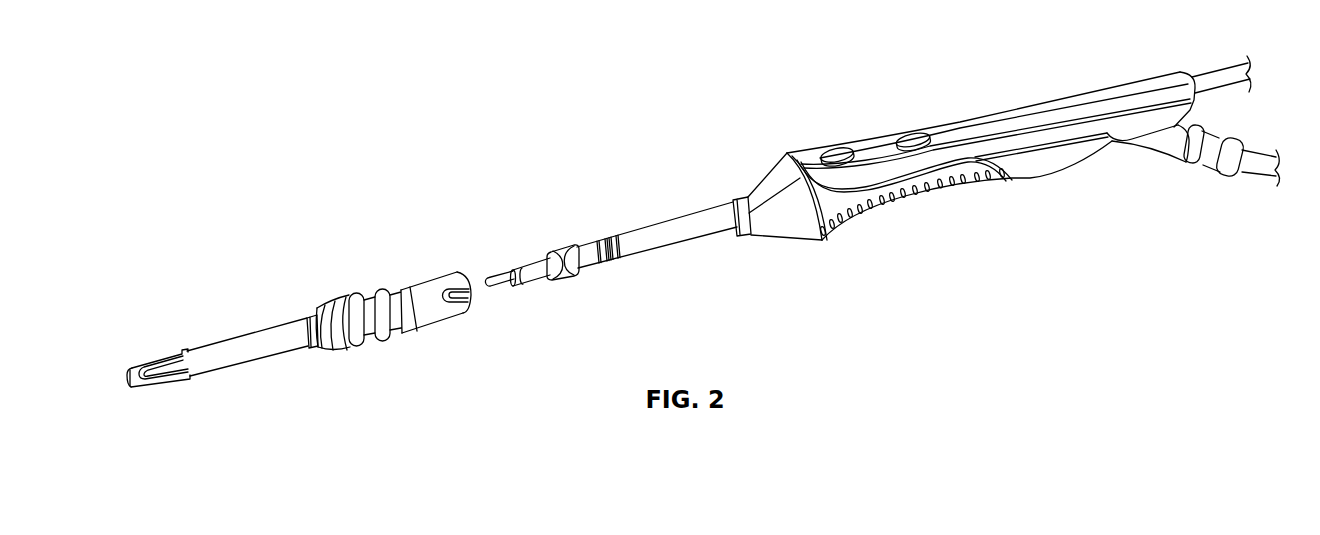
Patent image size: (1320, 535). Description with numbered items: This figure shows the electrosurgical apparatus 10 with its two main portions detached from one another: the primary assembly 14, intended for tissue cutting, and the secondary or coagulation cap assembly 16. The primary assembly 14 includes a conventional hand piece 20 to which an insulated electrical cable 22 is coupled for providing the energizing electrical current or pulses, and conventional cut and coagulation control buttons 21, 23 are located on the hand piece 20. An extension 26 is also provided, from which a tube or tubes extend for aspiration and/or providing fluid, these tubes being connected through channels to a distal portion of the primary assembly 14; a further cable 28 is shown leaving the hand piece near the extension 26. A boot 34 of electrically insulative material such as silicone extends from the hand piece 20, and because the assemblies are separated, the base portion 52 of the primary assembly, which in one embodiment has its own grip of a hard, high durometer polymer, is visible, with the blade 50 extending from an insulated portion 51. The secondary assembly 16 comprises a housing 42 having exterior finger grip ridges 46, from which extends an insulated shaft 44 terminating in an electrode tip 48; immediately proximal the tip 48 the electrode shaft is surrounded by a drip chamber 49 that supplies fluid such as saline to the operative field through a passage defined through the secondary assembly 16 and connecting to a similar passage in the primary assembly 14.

The electrosurgical apparatus 10 is at (186, 207).
The primary assembly 14 is at (965, 232).
The secondary assembly 16 is at (256, 309).
The hand piece 20 is at (960, 127).
The cut control button 21 is at (838, 148).
The insulated electrical cable 22 is at (1217, 75).
The coagulation control button 23 is at (913, 133).
The extension 26 is at (1160, 148).
The second cable 28 is at (1256, 171).
The boot 34 is at (665, 229).
The housing 42 is at (338, 353).
The insulated shaft 44 is at (256, 363).
The finger grip ridges 46 is at (365, 293).
The electrode tip 48 is at (133, 389).
The drip chamber 49 is at (157, 359).
The blade 50 is at (495, 274).
The insulated portion 51 is at (534, 263).
The base portion 52 is at (568, 283).